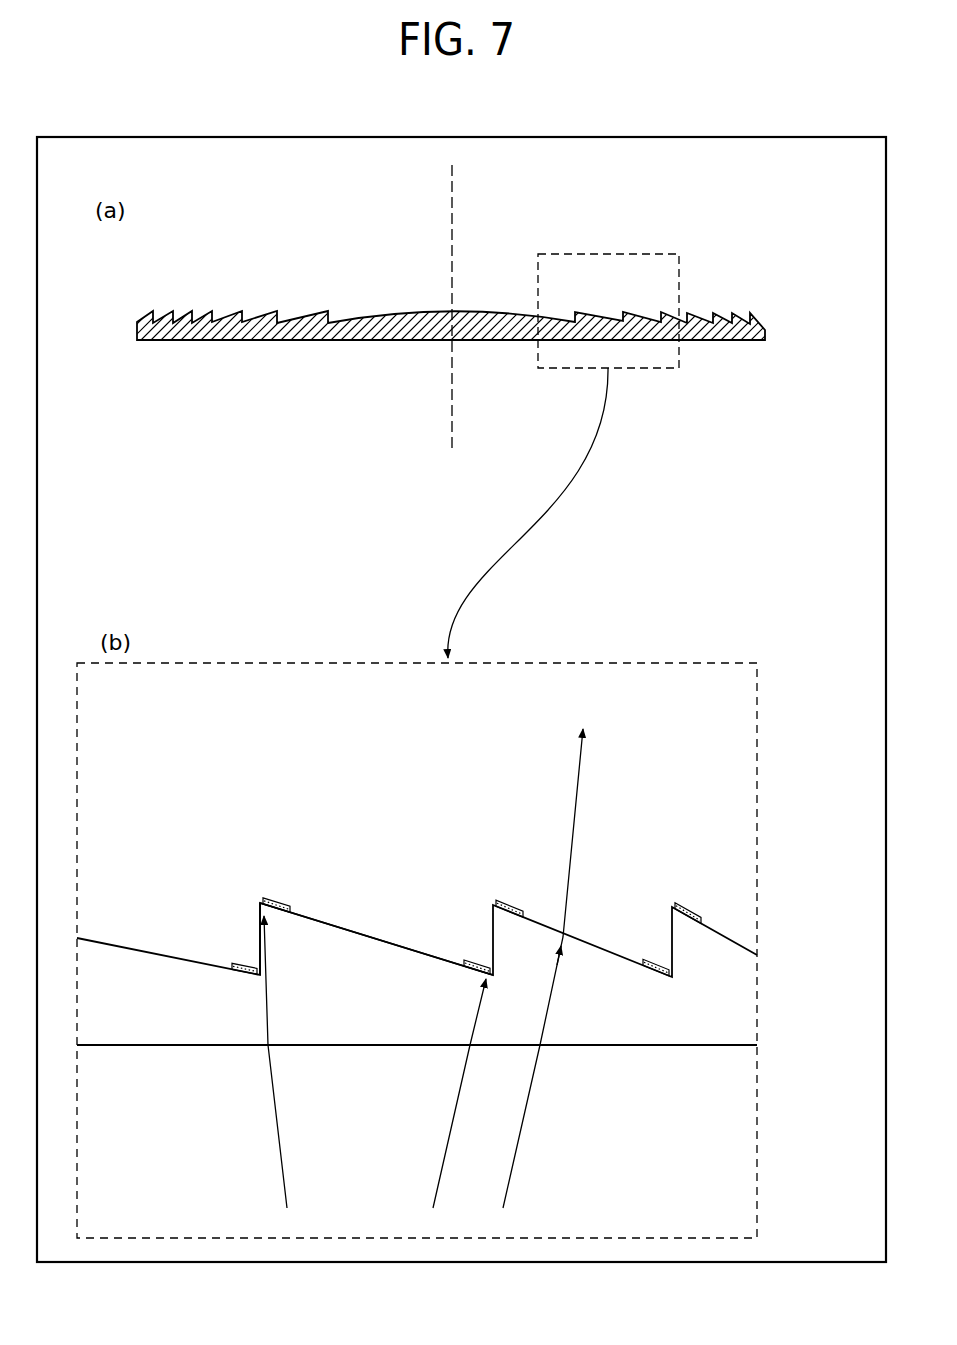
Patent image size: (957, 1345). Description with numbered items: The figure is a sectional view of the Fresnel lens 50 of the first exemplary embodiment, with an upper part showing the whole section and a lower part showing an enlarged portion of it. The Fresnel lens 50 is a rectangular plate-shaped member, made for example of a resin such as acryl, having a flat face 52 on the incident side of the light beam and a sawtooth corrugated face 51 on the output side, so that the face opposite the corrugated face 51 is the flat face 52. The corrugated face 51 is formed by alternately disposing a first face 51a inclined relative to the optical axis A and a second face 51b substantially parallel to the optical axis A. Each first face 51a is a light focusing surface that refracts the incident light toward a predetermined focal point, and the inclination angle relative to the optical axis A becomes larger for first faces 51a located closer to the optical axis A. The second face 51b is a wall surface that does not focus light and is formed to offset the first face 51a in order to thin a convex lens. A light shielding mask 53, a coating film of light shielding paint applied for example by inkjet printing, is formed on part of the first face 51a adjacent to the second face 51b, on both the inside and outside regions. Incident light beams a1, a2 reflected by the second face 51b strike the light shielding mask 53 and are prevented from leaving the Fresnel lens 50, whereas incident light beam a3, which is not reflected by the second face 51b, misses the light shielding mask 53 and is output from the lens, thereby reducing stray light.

The Fresnel lens 50 is at (767, 333).
The corrugated face 51 is at (656, 916).
The first face 51a is at (357, 927).
The second face 51b is at (258, 922).
The flat face 52 is at (391, 1049).
The light shielding mask 53 is at (240, 965).
The optical axis A is at (450, 321).
The incident light beam a1 is at (284, 1074).
The incident light beam a2 is at (451, 1106).
The incident light beam a3 is at (536, 981).